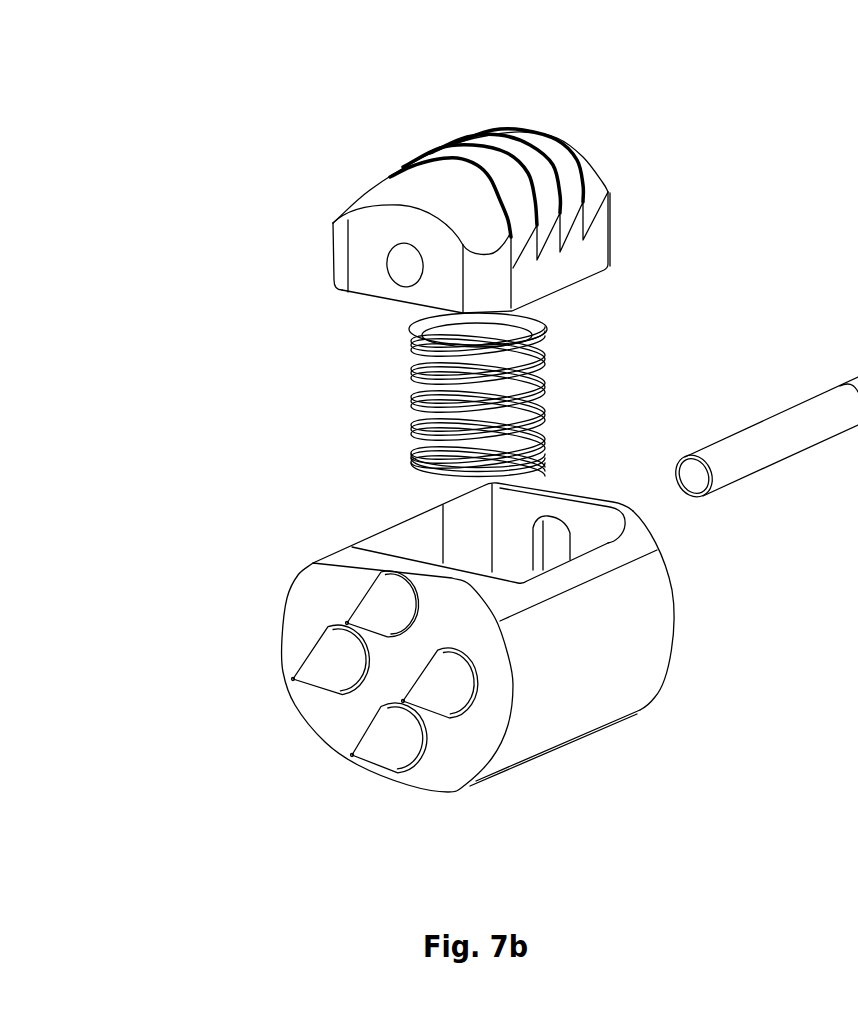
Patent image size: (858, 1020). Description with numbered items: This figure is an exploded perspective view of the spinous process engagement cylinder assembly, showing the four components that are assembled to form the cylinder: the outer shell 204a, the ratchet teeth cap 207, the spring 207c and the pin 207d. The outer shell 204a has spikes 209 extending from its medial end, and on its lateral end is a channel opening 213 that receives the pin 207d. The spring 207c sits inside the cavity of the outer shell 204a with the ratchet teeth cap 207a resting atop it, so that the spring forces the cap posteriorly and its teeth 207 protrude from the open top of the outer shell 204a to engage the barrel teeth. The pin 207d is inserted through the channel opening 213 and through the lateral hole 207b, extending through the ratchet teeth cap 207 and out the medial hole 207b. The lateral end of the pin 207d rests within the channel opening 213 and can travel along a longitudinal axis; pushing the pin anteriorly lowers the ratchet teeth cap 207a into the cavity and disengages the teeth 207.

The ratchet teeth cap 207 is at (503, 183).
The ratchet teeth cap 207a is at (387, 227).
The hole 207b is at (402, 257).
The spring 207c is at (545, 347).
The pin 207d is at (777, 445).
The outer shell 204a is at (327, 719).
The spikes 209 is at (386, 735).
The channel opening 213 is at (556, 545).